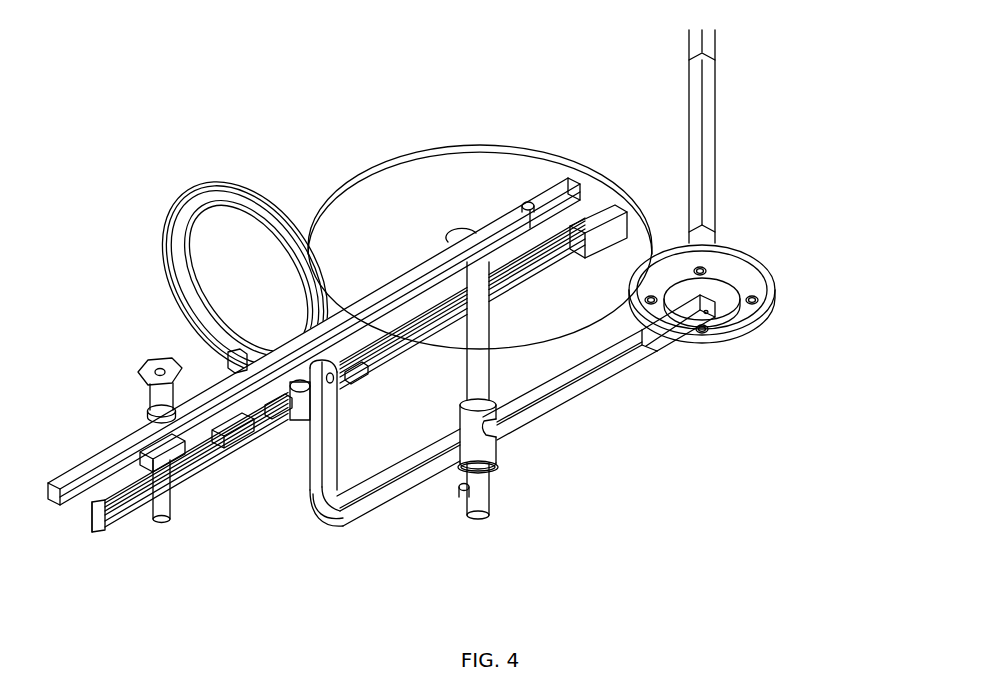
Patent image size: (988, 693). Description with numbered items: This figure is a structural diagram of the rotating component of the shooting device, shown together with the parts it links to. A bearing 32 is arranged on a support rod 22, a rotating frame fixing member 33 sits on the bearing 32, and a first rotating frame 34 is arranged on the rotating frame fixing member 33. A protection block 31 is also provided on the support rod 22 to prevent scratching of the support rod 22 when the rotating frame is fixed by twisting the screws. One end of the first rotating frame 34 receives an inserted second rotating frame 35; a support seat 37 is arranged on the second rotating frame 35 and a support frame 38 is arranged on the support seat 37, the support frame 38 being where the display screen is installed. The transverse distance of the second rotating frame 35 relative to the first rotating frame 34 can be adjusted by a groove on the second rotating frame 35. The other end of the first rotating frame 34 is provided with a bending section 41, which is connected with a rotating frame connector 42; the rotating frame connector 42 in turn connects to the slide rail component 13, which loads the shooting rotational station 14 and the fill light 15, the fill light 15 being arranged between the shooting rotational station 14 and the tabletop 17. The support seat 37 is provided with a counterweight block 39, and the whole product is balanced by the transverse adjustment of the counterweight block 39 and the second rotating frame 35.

The slide rail component 13 is at (298, 341).
The shooting rotational station 14 is at (341, 368).
The fill light 15 is at (235, 236).
The tabletop 17 is at (465, 208).
The support rod 22 is at (513, 424).
The protection block 31 is at (433, 528).
The bearing 32 is at (510, 405).
The rotating frame fixing member 33 is at (534, 491).
The first rotating frame 34 is at (481, 476).
The second rotating frame 35 is at (718, 385).
The support seat 37 is at (776, 378).
The support frame 38 is at (780, 136).
The counterweight block 39 is at (773, 334).
The bending section 41 is at (272, 489).
The rotating frame connector 42 is at (232, 498).